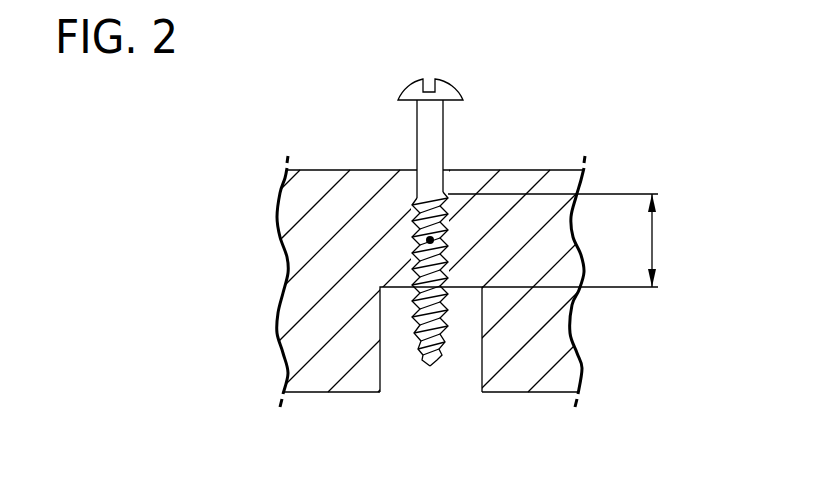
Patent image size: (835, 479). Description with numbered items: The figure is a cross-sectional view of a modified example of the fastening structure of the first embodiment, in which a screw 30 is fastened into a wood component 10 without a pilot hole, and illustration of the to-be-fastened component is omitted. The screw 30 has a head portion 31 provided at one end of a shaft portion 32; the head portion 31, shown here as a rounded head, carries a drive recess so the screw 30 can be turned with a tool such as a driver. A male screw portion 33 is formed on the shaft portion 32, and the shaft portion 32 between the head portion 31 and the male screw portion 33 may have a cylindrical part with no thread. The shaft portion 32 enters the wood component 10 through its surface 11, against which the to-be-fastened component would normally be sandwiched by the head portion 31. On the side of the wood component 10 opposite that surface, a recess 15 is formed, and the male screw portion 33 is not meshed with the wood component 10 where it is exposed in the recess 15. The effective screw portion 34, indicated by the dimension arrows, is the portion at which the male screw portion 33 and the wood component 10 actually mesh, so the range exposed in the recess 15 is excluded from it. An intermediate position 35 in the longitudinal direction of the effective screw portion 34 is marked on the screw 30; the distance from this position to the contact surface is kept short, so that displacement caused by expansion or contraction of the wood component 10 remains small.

The wood component 10 is at (559, 180).
The surface 11 is at (485, 170).
The recess 15 is at (381, 353).
The screw 30 is at (368, 238).
The head portion 31 is at (417, 81).
The shaft portion 32 is at (417, 133).
The male screw portion 33 is at (447, 305).
The effective screw portion 34 is at (636, 240).
The intermediate position 35 is at (430, 240).